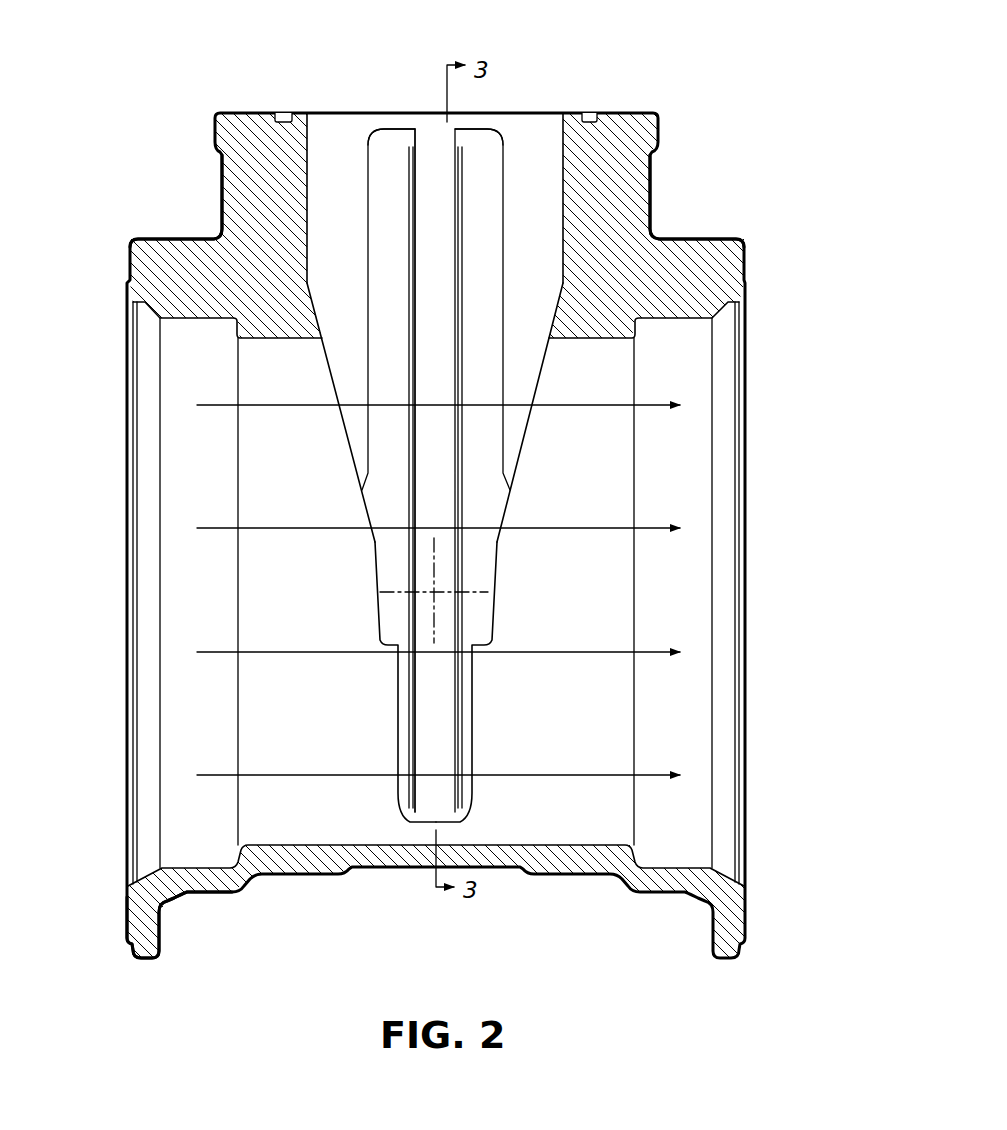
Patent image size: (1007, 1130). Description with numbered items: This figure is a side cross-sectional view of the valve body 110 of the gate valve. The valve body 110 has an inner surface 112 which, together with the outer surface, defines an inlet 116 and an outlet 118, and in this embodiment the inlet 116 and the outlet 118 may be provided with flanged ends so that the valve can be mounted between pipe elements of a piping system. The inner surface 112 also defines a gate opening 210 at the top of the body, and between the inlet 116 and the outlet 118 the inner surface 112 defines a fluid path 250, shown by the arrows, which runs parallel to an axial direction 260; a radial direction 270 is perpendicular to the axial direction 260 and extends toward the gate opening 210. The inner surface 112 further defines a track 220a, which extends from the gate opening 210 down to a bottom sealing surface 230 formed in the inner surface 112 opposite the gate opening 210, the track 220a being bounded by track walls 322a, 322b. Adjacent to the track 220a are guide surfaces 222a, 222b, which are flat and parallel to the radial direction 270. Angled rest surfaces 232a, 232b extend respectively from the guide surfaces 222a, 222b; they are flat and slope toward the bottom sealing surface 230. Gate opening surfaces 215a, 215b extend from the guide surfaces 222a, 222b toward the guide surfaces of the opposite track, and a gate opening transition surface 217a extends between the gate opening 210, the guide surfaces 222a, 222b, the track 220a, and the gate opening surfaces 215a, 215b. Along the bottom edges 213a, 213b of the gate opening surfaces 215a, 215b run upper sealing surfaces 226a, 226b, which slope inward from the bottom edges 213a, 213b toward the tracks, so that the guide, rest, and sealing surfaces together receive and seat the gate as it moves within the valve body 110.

The valve body 110 is at (105, 948).
The inner surface 112 is at (560, 682).
The inlet 116 is at (127, 597).
The outlet 118 is at (745, 540).
The gate opening 210 is at (545, 113).
The bottom edge 213a is at (278, 278).
The bottom edge 213b is at (568, 284).
The gate opening surface 215a is at (345, 303).
The gate opening surface 215b is at (518, 252).
The gate opening transition surface 217a is at (420, 188).
The track 220a is at (450, 423).
The guide surface 222a is at (387, 257).
The guide surface 222b is at (485, 245).
The upper sealing surface 226a is at (322, 318).
The upper sealing surface 226b is at (550, 318).
The bottom sealing surface 230 is at (478, 843).
The angled rest surface 232a is at (390, 620).
The angled rest surface 232b is at (482, 510).
The fluid path 250 is at (215, 775).
The axial direction 260 is at (425, 590).
The radial direction 270 is at (435, 543).
The track wall 322a is at (440, 127).
The track wall 322b is at (450, 230).